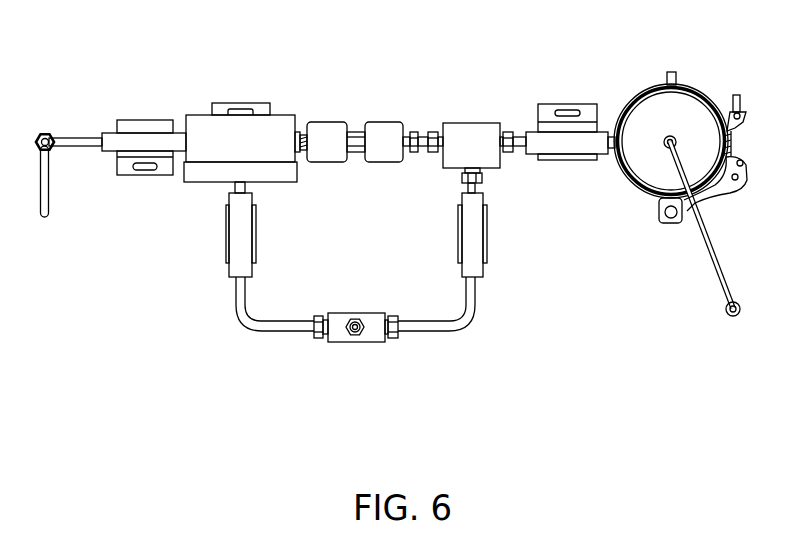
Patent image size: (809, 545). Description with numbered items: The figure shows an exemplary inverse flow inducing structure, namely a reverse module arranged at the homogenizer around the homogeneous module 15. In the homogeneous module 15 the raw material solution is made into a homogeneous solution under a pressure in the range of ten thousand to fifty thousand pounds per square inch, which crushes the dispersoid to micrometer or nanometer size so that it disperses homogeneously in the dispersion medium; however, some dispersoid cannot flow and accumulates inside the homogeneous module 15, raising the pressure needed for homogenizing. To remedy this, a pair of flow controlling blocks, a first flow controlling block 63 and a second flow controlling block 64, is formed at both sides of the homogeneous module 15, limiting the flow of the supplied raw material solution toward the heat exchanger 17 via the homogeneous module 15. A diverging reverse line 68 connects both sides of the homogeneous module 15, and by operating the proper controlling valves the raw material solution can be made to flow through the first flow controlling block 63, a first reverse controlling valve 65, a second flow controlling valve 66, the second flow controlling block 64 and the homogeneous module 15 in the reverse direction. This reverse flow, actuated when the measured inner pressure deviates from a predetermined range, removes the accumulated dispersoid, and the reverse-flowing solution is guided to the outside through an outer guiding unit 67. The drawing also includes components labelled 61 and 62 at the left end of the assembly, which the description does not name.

The homogeneous module 15 is at (358, 122).
The heat exchanger 17 is at (690, 122).
The handle 61 is at (72, 137).
The cylinder 62 is at (143, 177).
The first flow controlling block 63 is at (270, 128).
The second flow controlling block 64 is at (472, 122).
The first reverse controlling valve 65 is at (490, 240).
The second flow controlling valve 66 is at (228, 237).
The outer guiding unit 67 is at (368, 337).
The diverging reverse line 68 is at (250, 325).